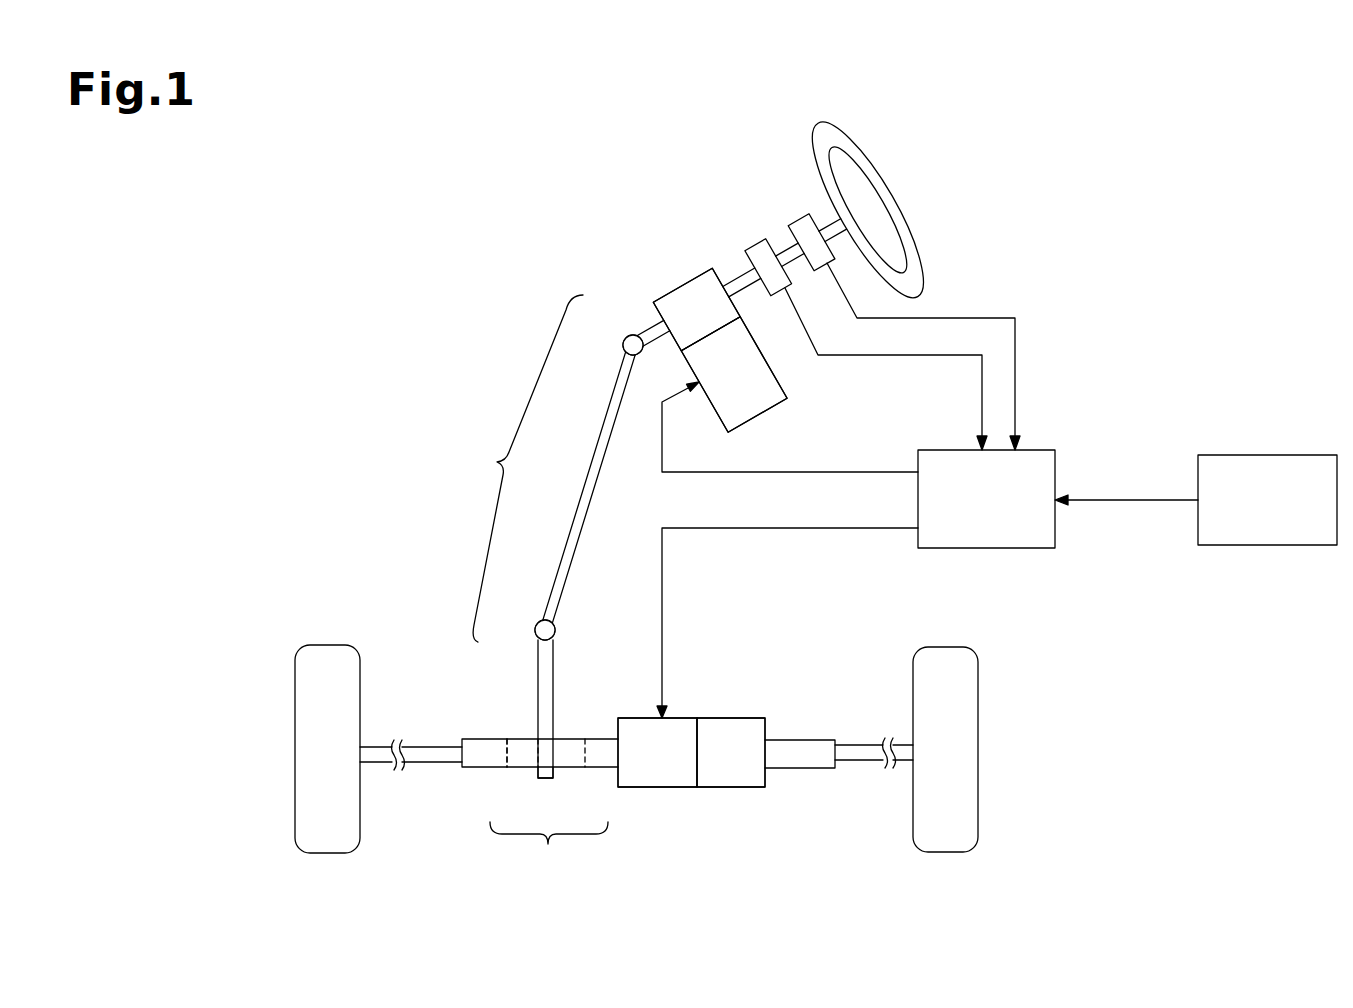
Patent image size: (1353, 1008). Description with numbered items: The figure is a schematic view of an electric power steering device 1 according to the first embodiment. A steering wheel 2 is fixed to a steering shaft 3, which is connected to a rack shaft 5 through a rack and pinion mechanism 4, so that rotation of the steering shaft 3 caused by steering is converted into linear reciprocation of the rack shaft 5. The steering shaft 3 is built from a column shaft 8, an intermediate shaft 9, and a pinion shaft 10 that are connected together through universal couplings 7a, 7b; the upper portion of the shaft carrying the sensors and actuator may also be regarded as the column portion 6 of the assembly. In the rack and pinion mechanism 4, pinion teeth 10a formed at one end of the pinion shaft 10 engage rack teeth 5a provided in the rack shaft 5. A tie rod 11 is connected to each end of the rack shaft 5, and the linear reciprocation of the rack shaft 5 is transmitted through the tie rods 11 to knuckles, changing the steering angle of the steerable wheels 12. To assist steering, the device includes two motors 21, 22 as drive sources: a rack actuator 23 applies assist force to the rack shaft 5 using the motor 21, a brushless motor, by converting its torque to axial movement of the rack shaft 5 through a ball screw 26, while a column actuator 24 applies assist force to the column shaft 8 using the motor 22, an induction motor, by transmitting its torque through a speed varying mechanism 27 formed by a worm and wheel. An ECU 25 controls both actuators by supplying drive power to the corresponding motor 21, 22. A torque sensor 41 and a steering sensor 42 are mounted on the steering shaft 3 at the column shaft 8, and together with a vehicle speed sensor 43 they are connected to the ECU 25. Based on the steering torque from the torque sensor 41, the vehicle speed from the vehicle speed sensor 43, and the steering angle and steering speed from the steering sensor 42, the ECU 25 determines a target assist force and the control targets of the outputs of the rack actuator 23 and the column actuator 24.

The electric power steering device 1 is at (1115, 155).
The steering wheel 2 is at (850, 131).
The steering shaft 3 is at (566, 536).
The rack and pinion mechanism 4 is at (648, 781).
The rack shaft 5 is at (481, 736).
The rack teeth 5a is at (524, 768).
The column shaft 6 is at (742, 283).
The universal coupling 7a is at (641, 356).
The universal coupling 7b is at (557, 630).
The column shaft 8 is at (641, 329).
The intermediate shaft 9 is at (592, 458).
The pinion shaft 10 is at (537, 638).
The pinion teeth 10a is at (550, 755).
The tie rod 11 is at (428, 745).
The steerable wheel 12 is at (320, 645).
The motor 21 is at (683, 720).
The motor 22 is at (780, 386).
The rack actuator 23 is at (723, 743).
The column actuator 24 is at (779, 323).
The ECU 25 is at (1036, 449).
The ball screw 26 is at (734, 720).
The speed varying mechanism 27 is at (680, 292).
The torque sensor 41 is at (748, 246).
The steering sensor 42 is at (791, 222).
The vehicle speed sensor 43 is at (1284, 454).